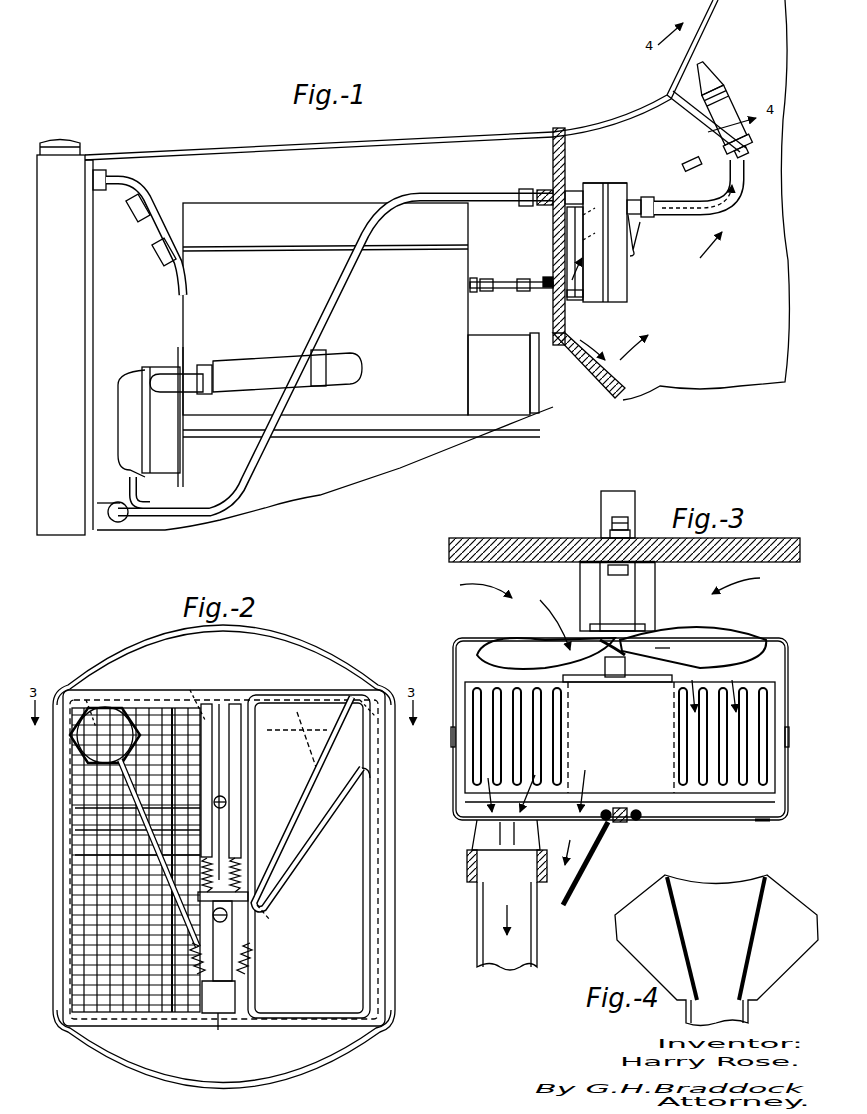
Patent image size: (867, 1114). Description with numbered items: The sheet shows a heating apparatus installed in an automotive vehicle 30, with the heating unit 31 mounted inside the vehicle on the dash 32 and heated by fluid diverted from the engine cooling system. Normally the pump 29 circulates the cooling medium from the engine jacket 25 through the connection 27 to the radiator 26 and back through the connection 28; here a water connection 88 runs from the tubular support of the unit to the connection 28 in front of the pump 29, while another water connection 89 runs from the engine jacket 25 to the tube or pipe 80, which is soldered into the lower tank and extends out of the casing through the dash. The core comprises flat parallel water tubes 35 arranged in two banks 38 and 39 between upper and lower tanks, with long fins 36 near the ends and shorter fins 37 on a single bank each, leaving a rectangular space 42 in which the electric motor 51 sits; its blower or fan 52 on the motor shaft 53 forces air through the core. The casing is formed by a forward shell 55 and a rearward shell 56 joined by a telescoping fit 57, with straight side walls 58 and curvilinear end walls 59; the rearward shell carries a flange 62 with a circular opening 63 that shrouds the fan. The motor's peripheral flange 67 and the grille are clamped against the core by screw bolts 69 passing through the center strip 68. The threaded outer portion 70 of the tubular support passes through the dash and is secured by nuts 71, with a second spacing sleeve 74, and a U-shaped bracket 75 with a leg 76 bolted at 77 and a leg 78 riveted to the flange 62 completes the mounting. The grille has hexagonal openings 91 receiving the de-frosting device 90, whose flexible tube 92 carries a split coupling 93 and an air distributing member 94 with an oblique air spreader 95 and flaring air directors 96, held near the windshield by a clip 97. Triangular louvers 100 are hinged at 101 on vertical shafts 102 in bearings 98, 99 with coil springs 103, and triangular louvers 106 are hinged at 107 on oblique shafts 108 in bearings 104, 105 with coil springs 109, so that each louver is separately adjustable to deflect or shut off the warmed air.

In FIG. 1, the engine jacket 25 is at (468, 265).
In FIG. 1, the fluid-cooling radiator 26 is at (80, 327).
In FIG. 1, the fluid connection 27 is at (150, 210).
In FIG. 1, the fluid connection 28 is at (258, 358).
In FIG. 1, the pump 29 is at (128, 386).
In FIG. 1, the automotive vehicle 30 is at (678, 380).
In FIG. 1, the heating unit 31 is at (635, 297).
In FIG. 1, the dash 32 is at (553, 152).
In FIG. 3, the dash 32 is at (528, 546).
In FIG. 2, the fluid or water tubes 35 is at (90, 995).
In FIG. 3, the fluid or water tubes 35 is at (680, 735).
In FIG. 2, the fins 36 is at (172, 722).
In FIG. 2, the fins 37 is at (85, 855).
In FIG. 2, the bank or set of tubes 38 is at (78, 830).
In FIG. 3, the bank or set of tubes 38 is at (762, 770).
In FIG. 3, the bank or set of tubes 39 is at (462, 785).
In FIG. 2, the rectangular space 42 is at (72, 808).
In FIG. 2, the electric motor 51 is at (212, 945).
In FIG. 3, the electric motor 51 is at (620, 737).
In FIG. 1, the blower or fan 52 is at (568, 222).
In FIG. 3, the blower or fan 52 is at (700, 643).
In FIG. 3, the motor shaft 53 is at (626, 665).
In FIG. 3, the forward shell 55 is at (782, 810).
In FIG. 3, the rearward shell 56 is at (782, 702).
In FIG. 3, the telescoping fit 57 is at (787, 745).
In FIG. 2, the side walls 58 is at (54, 954).
In FIG. 2, the upper and lower end walls 59 is at (312, 640).
In FIG. 3, the flange 62 is at (770, 638).
In FIG. 3, the circular opening 63 is at (660, 650).
In FIG. 3, the peripheral flange 67 is at (612, 682).
In FIG. 3, the center strip 68 is at (618, 805).
In FIG. 2, the screw bolts 69 is at (228, 803).
In FIG. 1, the outer portion of tubular support 70 is at (527, 189).
In FIG. 1, the supporting nuts 71 is at (560, 192).
In FIG. 1, the second spacing sleeve 74 is at (585, 185).
In FIG. 1, the bracket or member 75 is at (568, 298).
In FIG. 3, the bracket or member 75 is at (650, 582).
In FIG. 3, the leg 76 is at (582, 570).
In FIG. 3, the bolt connection 77 is at (608, 532).
In FIG. 3, the leg 78 is at (596, 628).
In FIG. 1, the tube or pipe 80 is at (548, 278).
In FIG. 3, the tube or pipe 80 is at (620, 494).
In FIG. 1, the fluid or water connection 88 is at (425, 194).
In FIG. 1, the fluid or water connection 89 is at (503, 290).
In FIG. 1, the device for conveying warmed air 90 is at (711, 252).
In FIG. 2, the hexagonal openings 91 is at (92, 700).
In FIG. 3, the hexagonal openings 91 is at (472, 830).
In FIG. 1, the flexible tube 92 is at (745, 208).
In FIG. 3, the flexible tube 92 is at (475, 962).
In FIG. 4, the flexible tube 92 is at (753, 1014).
In FIG. 1, the split coupling member 93 is at (645, 199).
In FIG. 2, the split coupling member 93 is at (86, 718).
In FIG. 3, the split coupling member 93 is at (468, 850).
In FIG. 1, the air distributing member 94 is at (729, 86).
In FIG. 4, the air distributing member 94 is at (716, 949).
In FIG. 1, the air spreader 95 is at (714, 53).
In FIG. 4, the air spreader 95 is at (728, 898).
In FIG. 1, the air directors 96 is at (724, 115).
In FIG. 4, the air directors 96 is at (752, 932).
In FIG. 1, the clip 97 is at (739, 147).
In FIG. 2, the vertical bearings 98 is at (213, 703).
In FIG. 2, the vertical bearings 99 is at (213, 912).
In FIG. 1, the triangular louver 100 is at (642, 241).
In FIG. 2, the triangular louver 100 is at (290, 695).
In FIG. 3, the triangular louver 100 is at (722, 828).
In FIG. 2, the hinge 101 is at (180, 692).
In FIG. 3, the hinge 101 is at (634, 828).
In FIG. 2, the vertical shaft 102 is at (205, 802).
In FIG. 2, the coil spring 103 is at (204, 868).
In FIG. 2, the oblique bearings 104 is at (95, 772).
In FIG. 2, the oblique bearings 105 is at (228, 1020).
In FIG. 2, the triangular louver 106 is at (352, 944).
In FIG. 3, the triangular louver 106 is at (768, 835).
In FIG. 2, the hinge 107 is at (182, 860).
In FIG. 2, the oblique shaft 108 is at (100, 925).
In FIG. 2, the coil spring 109 is at (196, 968).